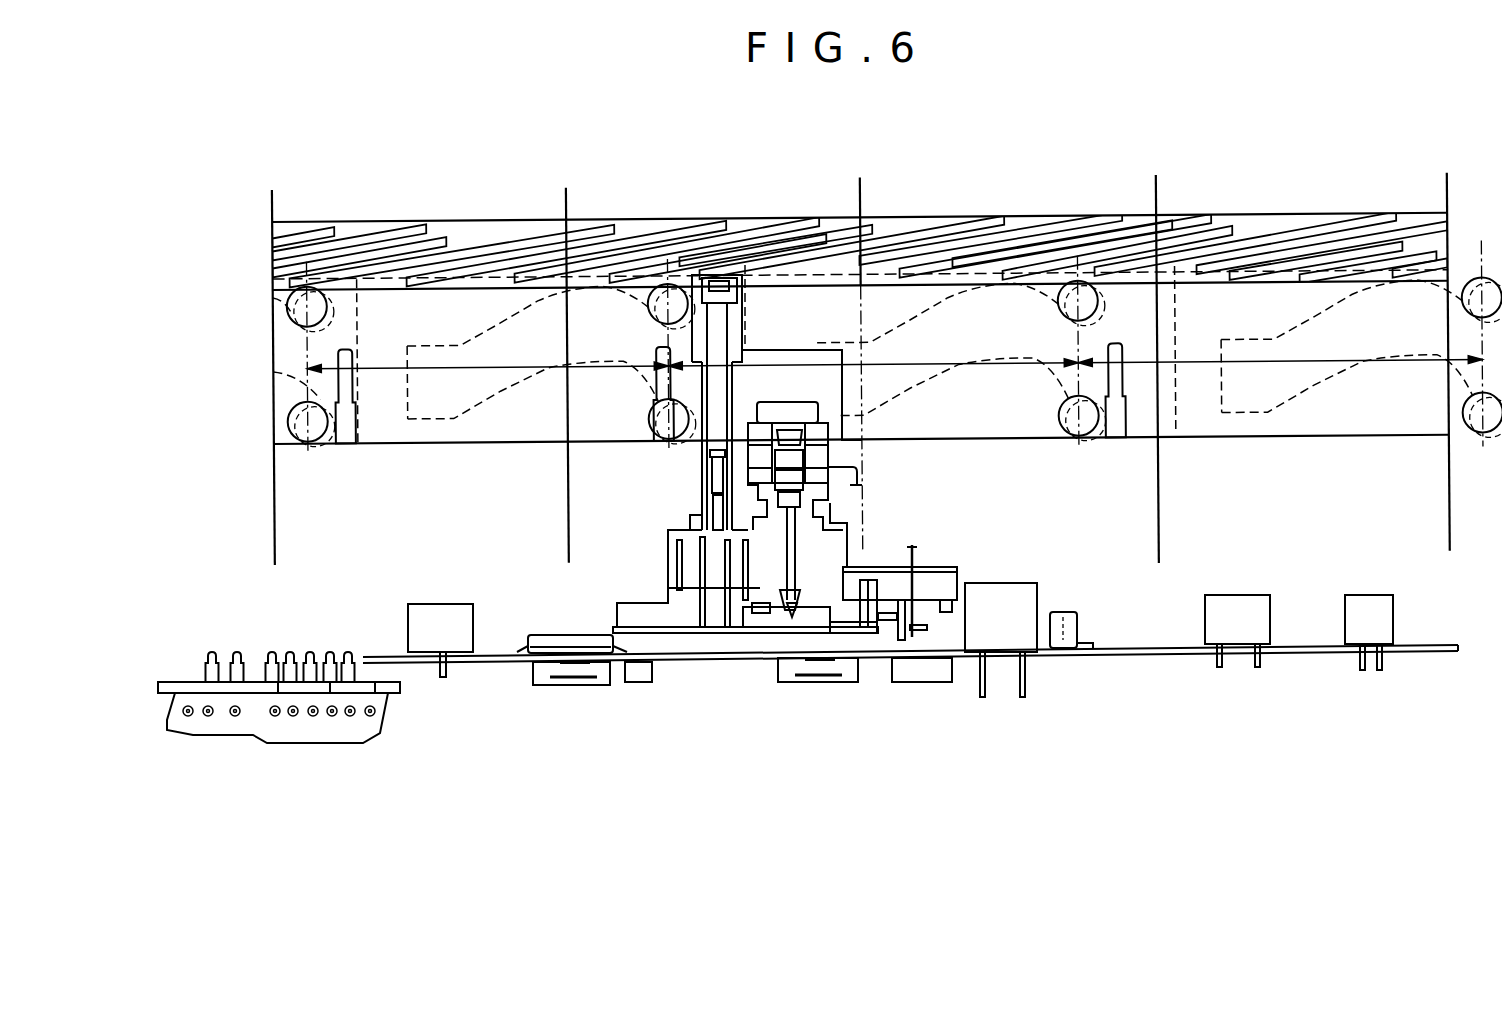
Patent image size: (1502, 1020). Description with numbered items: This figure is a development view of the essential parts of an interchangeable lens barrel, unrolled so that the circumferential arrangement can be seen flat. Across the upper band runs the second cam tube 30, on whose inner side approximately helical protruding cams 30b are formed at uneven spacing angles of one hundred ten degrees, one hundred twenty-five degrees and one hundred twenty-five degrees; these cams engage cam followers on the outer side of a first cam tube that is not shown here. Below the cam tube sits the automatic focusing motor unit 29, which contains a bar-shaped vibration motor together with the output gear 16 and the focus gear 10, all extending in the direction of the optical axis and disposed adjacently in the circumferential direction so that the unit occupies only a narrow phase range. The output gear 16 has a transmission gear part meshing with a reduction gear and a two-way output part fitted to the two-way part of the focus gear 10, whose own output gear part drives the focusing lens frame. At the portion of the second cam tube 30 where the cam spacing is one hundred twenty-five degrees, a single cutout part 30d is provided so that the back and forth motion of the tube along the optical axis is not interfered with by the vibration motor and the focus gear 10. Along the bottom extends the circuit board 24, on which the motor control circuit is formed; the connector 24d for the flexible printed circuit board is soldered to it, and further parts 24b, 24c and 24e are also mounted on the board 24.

The focus gear 10 is at (720, 384).
The output gear 16 is at (700, 503).
The circuit board 24 is at (1438, 657).
The connector 24b is at (553, 637).
The electronic component 24c is at (442, 612).
The connector 24d is at (822, 683).
The component under board 24e is at (605, 686).
The automatic focusing motor unit 29 is at (848, 533).
The second cam tube 30 is at (1268, 232).
The protruding cams 30b is at (495, 300).
The cutout part 30d is at (770, 347).